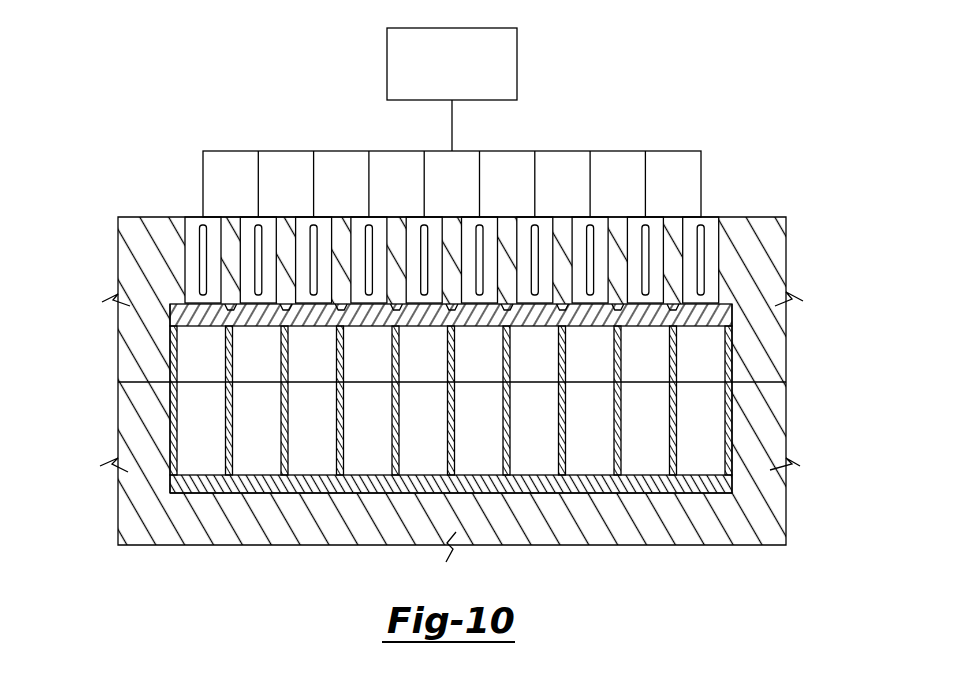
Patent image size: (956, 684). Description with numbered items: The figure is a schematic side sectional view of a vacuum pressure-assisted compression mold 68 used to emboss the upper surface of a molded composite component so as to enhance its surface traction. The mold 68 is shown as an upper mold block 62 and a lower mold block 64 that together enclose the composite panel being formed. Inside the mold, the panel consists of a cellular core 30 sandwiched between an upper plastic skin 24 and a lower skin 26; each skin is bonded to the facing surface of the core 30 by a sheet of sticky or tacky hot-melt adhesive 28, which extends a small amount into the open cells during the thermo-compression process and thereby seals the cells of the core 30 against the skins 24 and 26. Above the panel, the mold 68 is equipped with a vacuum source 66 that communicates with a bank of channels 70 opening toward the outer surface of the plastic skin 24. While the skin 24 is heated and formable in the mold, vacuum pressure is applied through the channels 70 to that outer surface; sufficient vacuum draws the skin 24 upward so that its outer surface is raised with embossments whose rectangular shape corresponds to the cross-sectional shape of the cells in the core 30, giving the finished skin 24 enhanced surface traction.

The vacuum source 66 is at (503, 67).
The mold 68 is at (735, 112).
The channels 70 is at (712, 245).
The upper mold block 62 is at (118, 318).
The lower mold block 64 is at (118, 472).
The skin 24 is at (733, 318).
The hot-melt adhesive 28 is at (737, 328).
The core 30 is at (720, 412).
The skin 26 is at (727, 495).